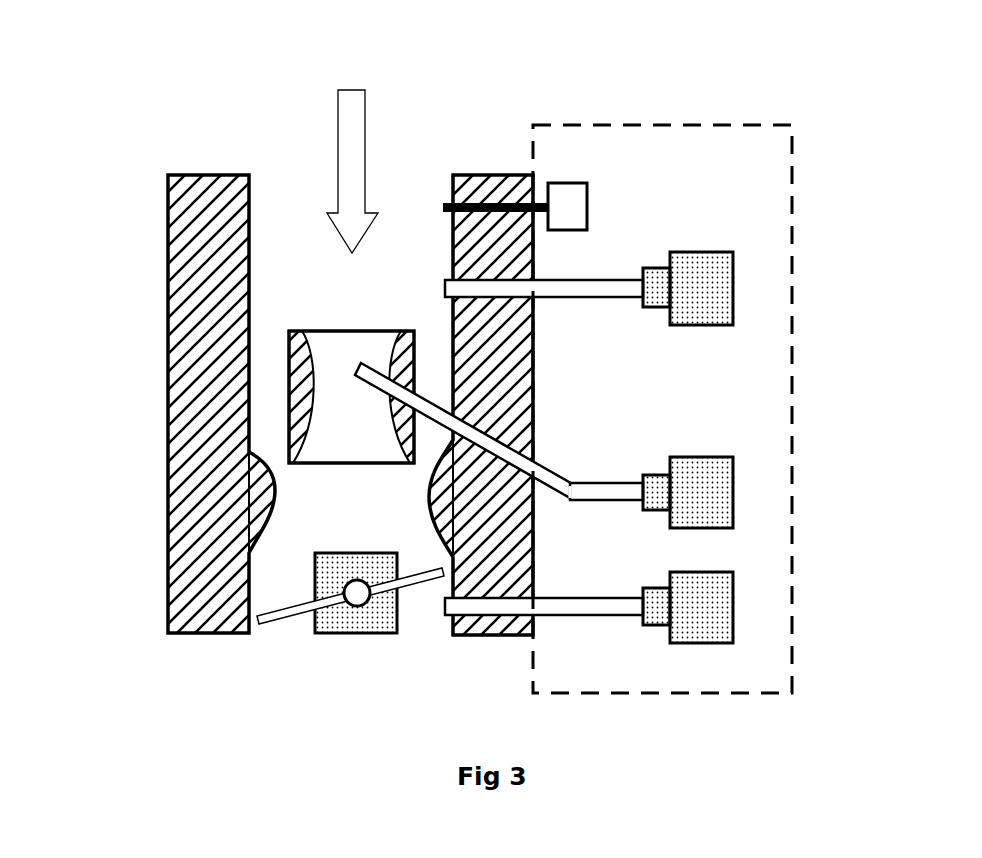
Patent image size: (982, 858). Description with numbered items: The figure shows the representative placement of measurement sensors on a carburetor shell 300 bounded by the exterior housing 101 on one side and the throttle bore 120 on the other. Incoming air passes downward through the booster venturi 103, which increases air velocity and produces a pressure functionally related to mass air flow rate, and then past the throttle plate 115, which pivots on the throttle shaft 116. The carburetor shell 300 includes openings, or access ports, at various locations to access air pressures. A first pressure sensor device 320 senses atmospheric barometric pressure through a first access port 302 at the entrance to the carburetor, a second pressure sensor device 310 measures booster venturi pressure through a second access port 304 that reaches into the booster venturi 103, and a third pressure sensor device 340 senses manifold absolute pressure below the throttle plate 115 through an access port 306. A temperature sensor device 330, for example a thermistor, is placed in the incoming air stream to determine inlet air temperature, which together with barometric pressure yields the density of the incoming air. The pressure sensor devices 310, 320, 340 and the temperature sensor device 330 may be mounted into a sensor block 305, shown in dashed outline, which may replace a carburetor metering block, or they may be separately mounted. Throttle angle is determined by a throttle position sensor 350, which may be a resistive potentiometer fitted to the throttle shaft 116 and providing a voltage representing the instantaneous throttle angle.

The carburetor shell 300 is at (145, 128).
The exterior housing 101 is at (168, 323).
The booster venturi 103 is at (307, 331).
The second access port 304 is at (362, 360).
The first access port 302 is at (445, 285).
The temperature sensor device 330 is at (572, 184).
The first pressure sensor device 320 is at (735, 288).
The second pressure sensor device 310 is at (735, 490).
The third pressure sensor device 340 is at (735, 608).
The sensor block 305 is at (715, 693).
The throttle shaft 116 is at (353, 585).
The throttle plate 115 is at (268, 625).
The throttle position sensor 350 is at (345, 637).
The access port 306 is at (445, 610).
The throttle bore 120 is at (450, 635).